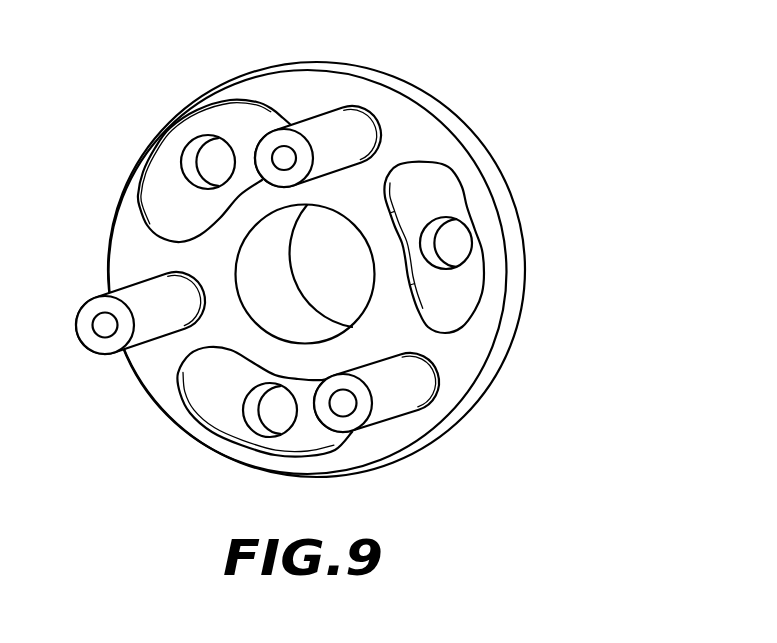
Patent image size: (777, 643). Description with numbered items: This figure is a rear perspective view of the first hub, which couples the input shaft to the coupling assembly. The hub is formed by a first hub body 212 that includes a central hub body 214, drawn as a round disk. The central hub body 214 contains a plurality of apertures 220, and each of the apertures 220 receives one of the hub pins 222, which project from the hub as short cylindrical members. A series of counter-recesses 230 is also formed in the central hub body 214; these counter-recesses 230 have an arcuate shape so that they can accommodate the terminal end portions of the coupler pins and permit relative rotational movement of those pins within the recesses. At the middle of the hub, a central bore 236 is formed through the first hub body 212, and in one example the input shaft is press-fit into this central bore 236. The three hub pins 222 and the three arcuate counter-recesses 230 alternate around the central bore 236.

The first hub body 212 is at (506, 230).
The central hub body 214 is at (512, 293).
The apertures 220 is at (372, 136).
The hub pins 222 is at (318, 122).
The counter-recesses 230 is at (187, 202).
The central bore 236 is at (267, 283).